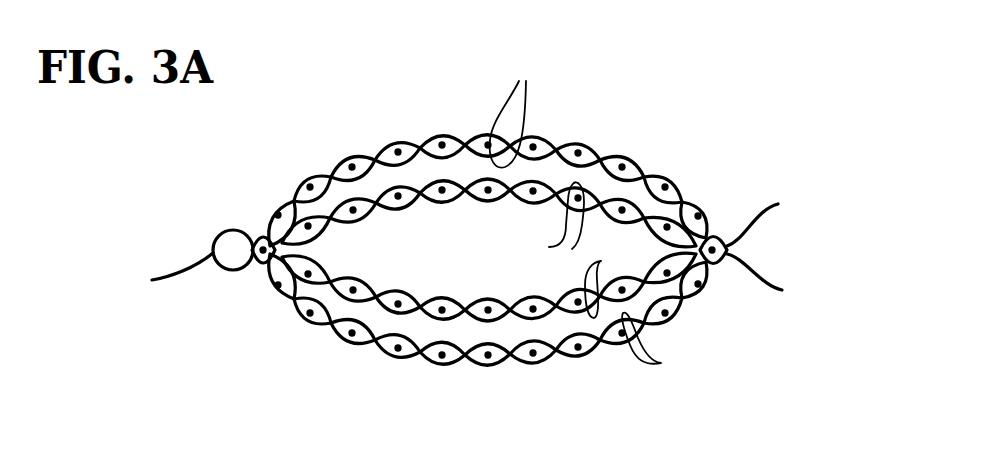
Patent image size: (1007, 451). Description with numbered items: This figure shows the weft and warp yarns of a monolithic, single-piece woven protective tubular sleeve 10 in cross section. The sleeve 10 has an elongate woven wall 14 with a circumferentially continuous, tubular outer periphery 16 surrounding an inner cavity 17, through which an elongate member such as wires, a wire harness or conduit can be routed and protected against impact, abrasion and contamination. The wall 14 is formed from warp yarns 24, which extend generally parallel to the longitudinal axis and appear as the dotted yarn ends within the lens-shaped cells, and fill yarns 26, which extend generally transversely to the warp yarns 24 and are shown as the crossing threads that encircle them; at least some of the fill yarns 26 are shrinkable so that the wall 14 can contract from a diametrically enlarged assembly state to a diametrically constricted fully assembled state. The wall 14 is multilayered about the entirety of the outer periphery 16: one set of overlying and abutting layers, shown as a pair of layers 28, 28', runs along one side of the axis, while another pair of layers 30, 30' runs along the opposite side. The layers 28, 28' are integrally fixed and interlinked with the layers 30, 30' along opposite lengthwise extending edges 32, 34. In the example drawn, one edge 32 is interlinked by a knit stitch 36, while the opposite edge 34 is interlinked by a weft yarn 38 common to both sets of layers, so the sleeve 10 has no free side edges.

The sleeve 10 is at (597, 89).
The woven wall 14 is at (657, 141).
The outer periphery 16 is at (676, 177).
The inner cavity 17 is at (477, 263).
The warp yarns 24 is at (397, 186).
The fill yarns 26 is at (591, 215).
The layer 28 is at (332, 128).
The layer 28' is at (394, 220).
The layer 30 is at (354, 372).
The layer 30' is at (387, 280).
The lengthwise extending edge 32 is at (166, 272).
The lengthwise extending edge 34 is at (767, 218).
The knit stitch 36 is at (226, 234).
The weft yarn 38 is at (769, 279).